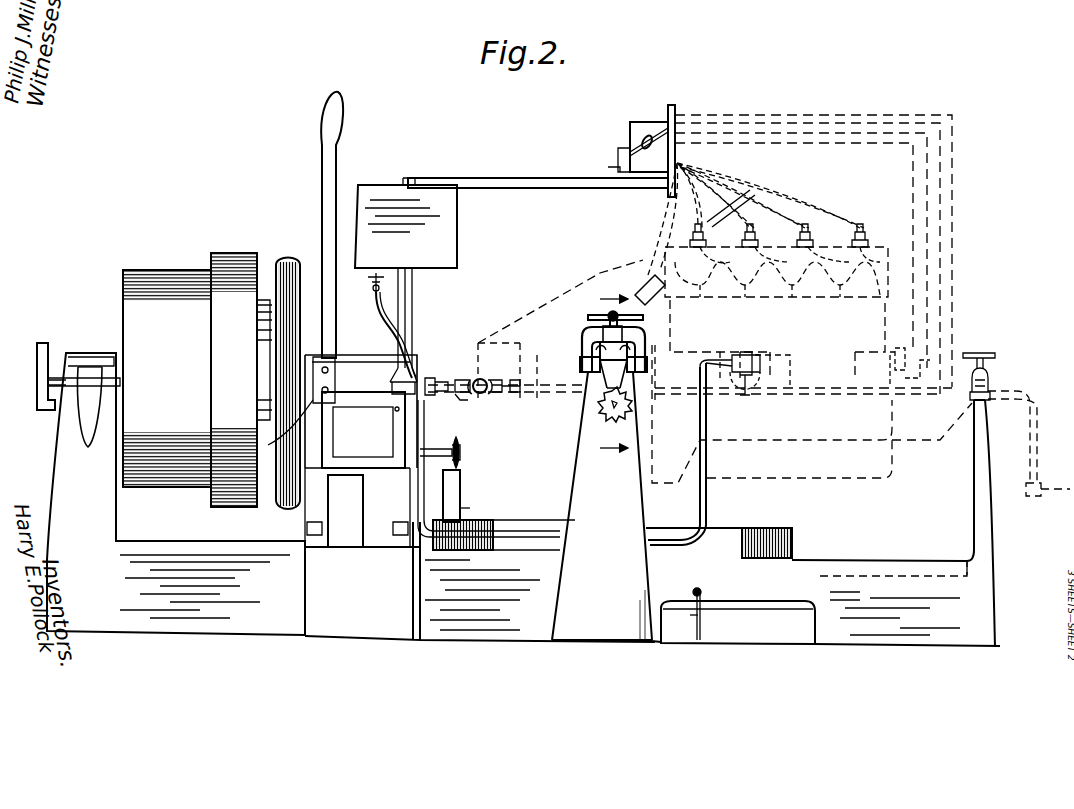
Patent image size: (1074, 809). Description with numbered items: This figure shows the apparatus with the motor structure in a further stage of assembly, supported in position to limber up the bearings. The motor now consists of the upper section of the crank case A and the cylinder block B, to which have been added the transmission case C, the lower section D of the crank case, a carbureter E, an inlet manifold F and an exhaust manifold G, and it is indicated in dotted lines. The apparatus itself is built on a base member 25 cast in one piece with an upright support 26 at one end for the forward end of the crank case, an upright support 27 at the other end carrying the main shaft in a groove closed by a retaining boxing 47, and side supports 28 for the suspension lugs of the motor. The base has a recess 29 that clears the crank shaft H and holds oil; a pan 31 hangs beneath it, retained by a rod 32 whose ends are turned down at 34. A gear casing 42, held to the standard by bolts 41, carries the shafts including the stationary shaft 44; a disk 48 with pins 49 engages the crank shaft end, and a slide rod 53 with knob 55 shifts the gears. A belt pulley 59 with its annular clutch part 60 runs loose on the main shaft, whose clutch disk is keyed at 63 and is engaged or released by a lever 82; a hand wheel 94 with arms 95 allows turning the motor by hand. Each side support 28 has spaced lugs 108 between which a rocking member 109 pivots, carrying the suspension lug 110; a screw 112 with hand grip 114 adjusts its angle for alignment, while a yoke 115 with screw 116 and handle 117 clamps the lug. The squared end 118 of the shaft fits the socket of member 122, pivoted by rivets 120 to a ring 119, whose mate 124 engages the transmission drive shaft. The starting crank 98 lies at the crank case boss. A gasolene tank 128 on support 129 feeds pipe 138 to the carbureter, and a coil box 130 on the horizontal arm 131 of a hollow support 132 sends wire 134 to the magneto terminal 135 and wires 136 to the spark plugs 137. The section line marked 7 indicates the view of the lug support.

The section line 7 is at (607, 373).
The base member 25 is at (533, 617).
The upright support 26 is at (985, 535).
The upright support 27 is at (62, 473).
The supports 28 is at (578, 510).
The recess 29 is at (722, 528).
The pan 31 is at (752, 632).
The rod 32 is at (699, 590).
The turned-down ends of the rod 34 is at (700, 625).
The bolts 41 is at (37, 395).
The gear casing 42 is at (395, 346).
The stationary shaft 44 is at (362, 511).
The retaining boxing 47 is at (104, 352).
The disk 48 is at (460, 483).
The pins 49 is at (465, 505).
The slide rod 53 is at (432, 449).
The handle or knob 55 is at (462, 450).
The belt pulley 59 is at (167, 378).
The annular part 60 is at (211, 258).
The key 63 is at (310, 418).
The lever 82 is at (322, 218).
The hand wheel 94 is at (290, 262).
The arms 95 is at (262, 300).
The crank 98 is at (1038, 440).
The spaced lugs 108 is at (647, 368).
The rocking member 109 is at (611, 375).
The suspension lug 110 is at (583, 340).
The screw 112 is at (609, 418).
The hand grip 114 is at (610, 405).
The yoke 115 is at (652, 348).
The screw 116 is at (596, 316).
The handle 117 is at (606, 313).
The squared end of shaft 118 is at (436, 378).
The ring 119 is at (490, 385).
The rivets 120 is at (480, 379).
The universal joint member 122 is at (456, 405).
The universal joint member 124 is at (500, 394).
The gasolene tank 128 is at (375, 200).
The support 129 is at (412, 330).
The electrical distributer (coil box) 130 is at (640, 163).
The horizontal arm 131 is at (510, 170).
The support 132 is at (413, 300).
The wire 134 is at (672, 225).
The magneto terminal 135 is at (640, 280).
The wires 136 is at (748, 215).
The spark plugs 137 is at (858, 240).
The pipe 138 is at (378, 298).
The crank case (upper section) A is at (880, 332).
The cylinder block B is at (818, 336).
The transmission case C is at (518, 325).
The lower section of crank case D is at (778, 433).
The carbureter E is at (765, 404).
The inlet manifold F is at (785, 348).
The exhaust manifold G is at (752, 268).
The crank shaft H is at (550, 380).